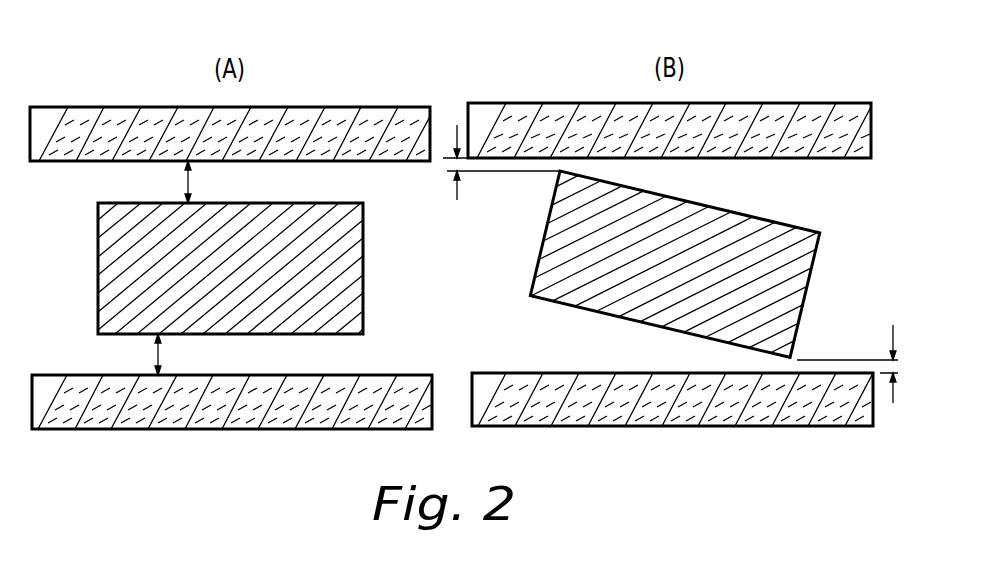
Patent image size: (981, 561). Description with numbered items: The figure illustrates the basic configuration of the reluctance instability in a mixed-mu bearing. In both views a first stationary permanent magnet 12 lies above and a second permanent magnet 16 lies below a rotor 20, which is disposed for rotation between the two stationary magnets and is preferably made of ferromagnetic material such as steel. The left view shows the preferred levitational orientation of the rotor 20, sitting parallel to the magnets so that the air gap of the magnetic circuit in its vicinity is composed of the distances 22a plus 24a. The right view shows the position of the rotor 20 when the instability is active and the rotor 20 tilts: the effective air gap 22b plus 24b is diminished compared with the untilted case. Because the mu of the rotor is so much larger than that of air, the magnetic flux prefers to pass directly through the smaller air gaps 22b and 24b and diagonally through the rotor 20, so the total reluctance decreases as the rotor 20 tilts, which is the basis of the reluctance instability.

In FIG. 2A, the first stationary permanent magnet 12 is at (80, 162).
In FIG. 2B, the first stationary permanent magnet 12 is at (795, 158).
In FIG. 2A, the second permanent magnet 16 is at (90, 375).
In FIG. 2B, the second permanent magnet 16 is at (528, 373).
In FIG. 2A, the rotor 20 is at (365, 245).
In FIG. 2B, the rotor 20 is at (811, 276).
In FIG. 2A, the distance 22a is at (190, 177).
In FIG. 2A, the distance 24a is at (160, 355).
In FIG. 2B, the effective air gap 22b is at (457, 186).
In FIG. 2B, the effective air gap 24b is at (890, 335).